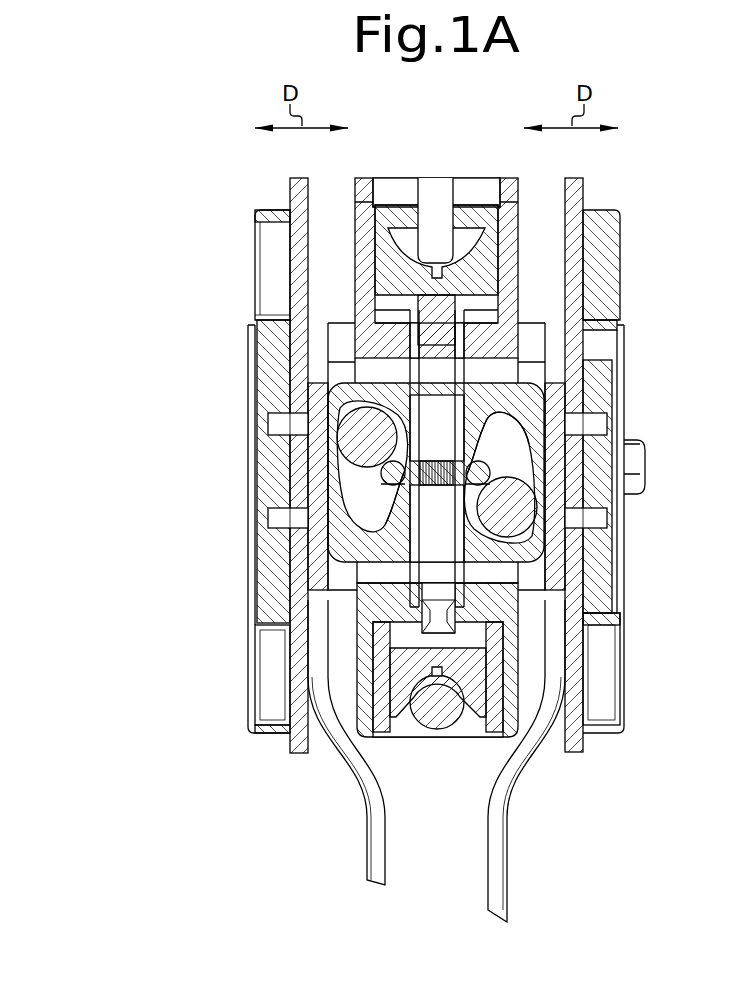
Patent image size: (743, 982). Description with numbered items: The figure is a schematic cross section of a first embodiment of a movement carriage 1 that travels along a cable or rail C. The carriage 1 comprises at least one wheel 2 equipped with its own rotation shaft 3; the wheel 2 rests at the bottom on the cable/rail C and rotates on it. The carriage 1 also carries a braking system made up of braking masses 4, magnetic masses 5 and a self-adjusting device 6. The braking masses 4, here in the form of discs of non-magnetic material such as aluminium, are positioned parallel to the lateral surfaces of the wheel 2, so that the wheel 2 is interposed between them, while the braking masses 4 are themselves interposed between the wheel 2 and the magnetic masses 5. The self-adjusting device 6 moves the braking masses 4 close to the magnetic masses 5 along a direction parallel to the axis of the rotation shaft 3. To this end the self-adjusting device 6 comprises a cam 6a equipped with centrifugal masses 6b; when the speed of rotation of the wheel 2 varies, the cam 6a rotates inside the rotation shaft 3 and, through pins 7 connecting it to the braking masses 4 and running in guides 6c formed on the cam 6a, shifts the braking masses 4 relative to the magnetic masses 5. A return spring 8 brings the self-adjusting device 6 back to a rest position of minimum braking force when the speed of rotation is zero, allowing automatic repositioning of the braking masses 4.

The carriage 1 is at (150, 412).
The wheel 2 is at (476, 250).
The rotation shaft 3 is at (295, 458).
The braking masses 4 is at (364, 222).
The magnetic masses 5 is at (273, 259).
The self-adjusting device 6 is at (530, 454).
The cam 6a is at (525, 432).
The centrifugal masses 6b is at (368, 441).
The guides 6c is at (364, 506).
The pins 7 is at (380, 473).
The return spring 8 is at (435, 476).
The cable/rail C is at (437, 708).